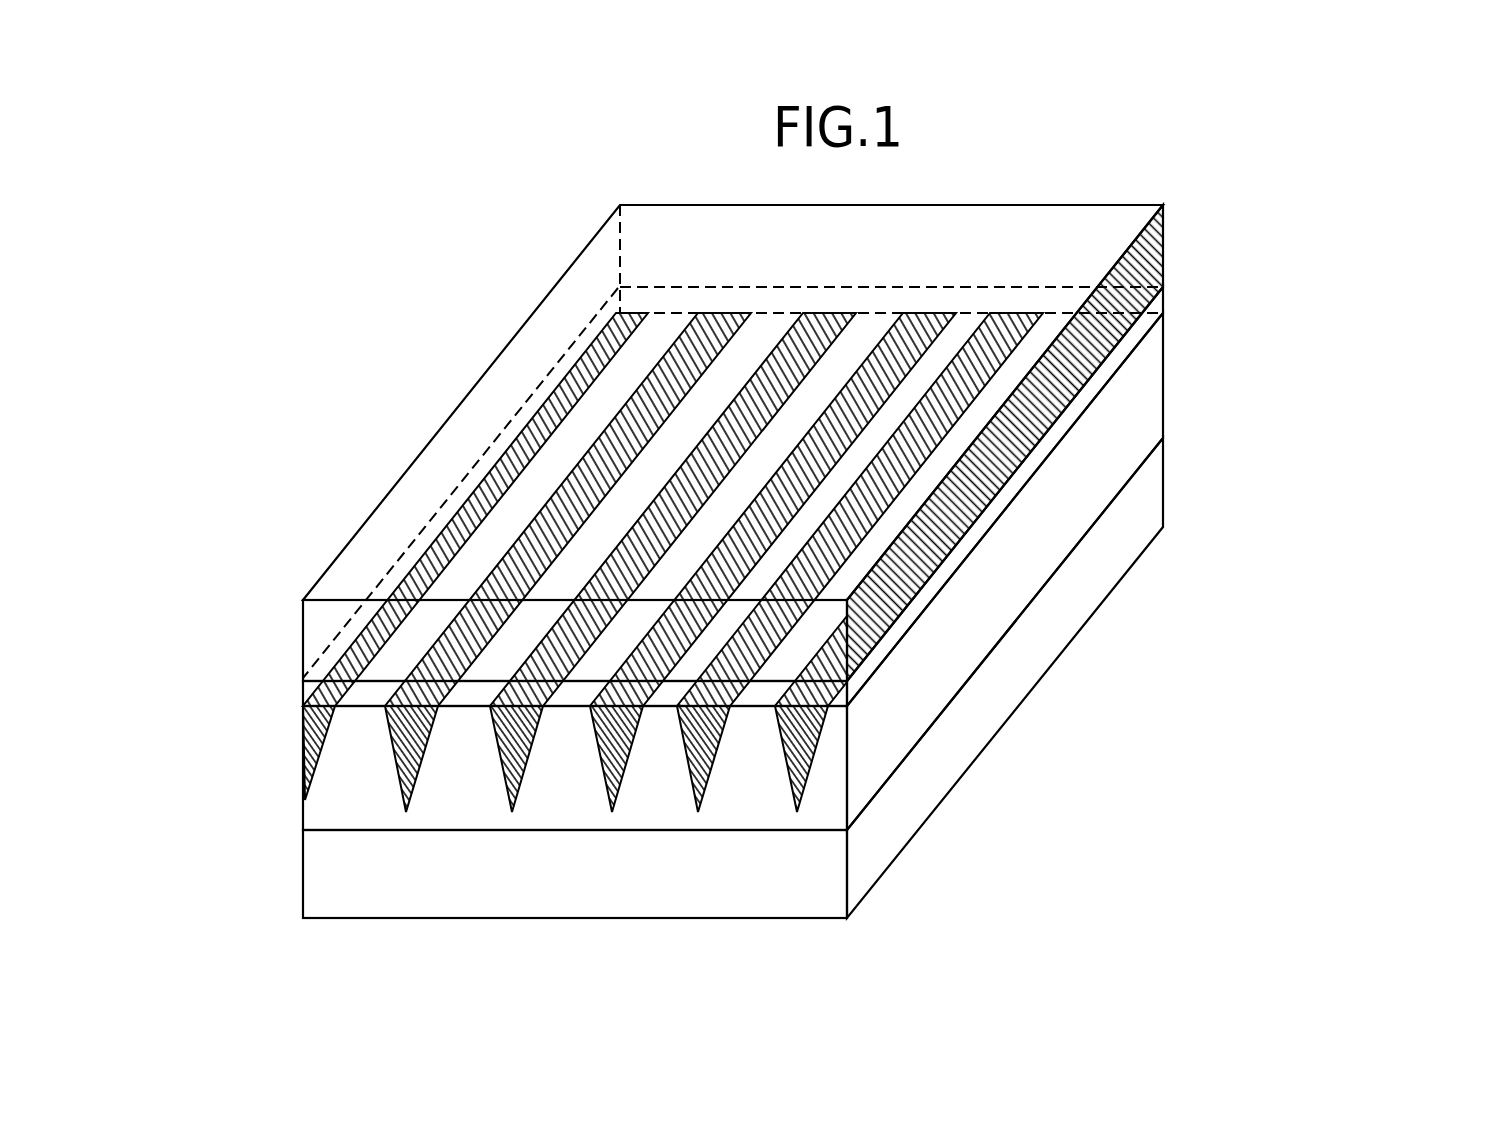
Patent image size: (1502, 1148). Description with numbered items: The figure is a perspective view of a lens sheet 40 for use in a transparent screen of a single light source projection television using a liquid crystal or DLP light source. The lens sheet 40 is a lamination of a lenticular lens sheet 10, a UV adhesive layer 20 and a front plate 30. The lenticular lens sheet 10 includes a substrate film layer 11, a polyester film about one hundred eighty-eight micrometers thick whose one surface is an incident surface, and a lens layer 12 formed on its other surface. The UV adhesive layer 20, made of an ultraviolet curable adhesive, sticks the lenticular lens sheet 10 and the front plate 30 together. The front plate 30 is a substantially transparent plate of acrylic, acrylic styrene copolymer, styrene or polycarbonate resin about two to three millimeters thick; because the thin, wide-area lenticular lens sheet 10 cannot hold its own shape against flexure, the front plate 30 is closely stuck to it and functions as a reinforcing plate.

The lenticular lens sheet 10 is at (293, 704).
The substrate film layer 11 is at (1047, 628).
The lens layer 12 is at (825, 784).
The UV adhesive layer 20 is at (1104, 374).
The front plate 30 is at (518, 369).
The lens sheet 40 is at (226, 623).